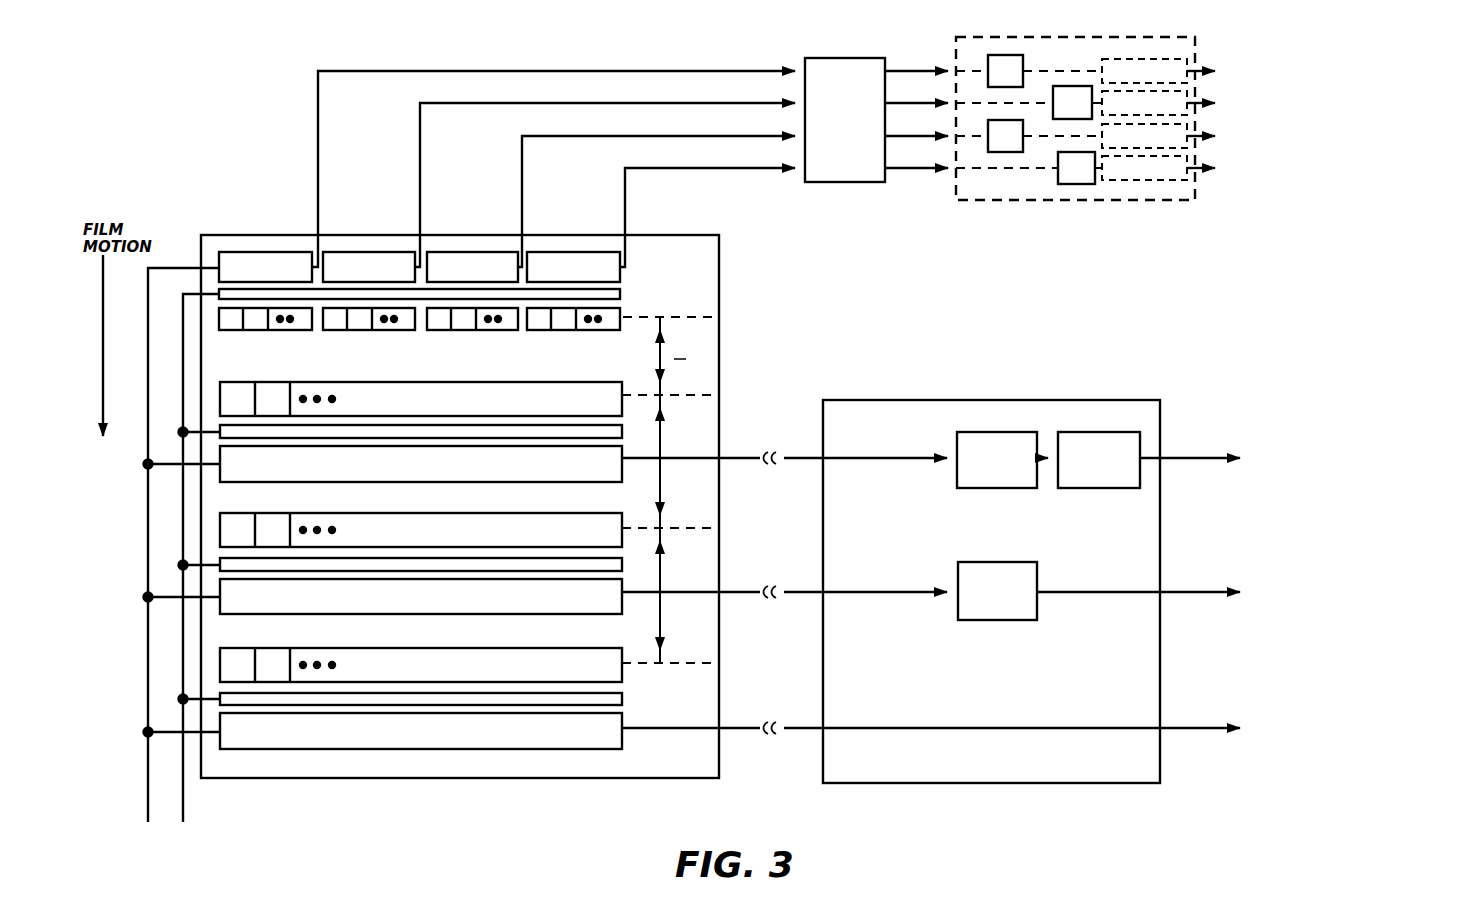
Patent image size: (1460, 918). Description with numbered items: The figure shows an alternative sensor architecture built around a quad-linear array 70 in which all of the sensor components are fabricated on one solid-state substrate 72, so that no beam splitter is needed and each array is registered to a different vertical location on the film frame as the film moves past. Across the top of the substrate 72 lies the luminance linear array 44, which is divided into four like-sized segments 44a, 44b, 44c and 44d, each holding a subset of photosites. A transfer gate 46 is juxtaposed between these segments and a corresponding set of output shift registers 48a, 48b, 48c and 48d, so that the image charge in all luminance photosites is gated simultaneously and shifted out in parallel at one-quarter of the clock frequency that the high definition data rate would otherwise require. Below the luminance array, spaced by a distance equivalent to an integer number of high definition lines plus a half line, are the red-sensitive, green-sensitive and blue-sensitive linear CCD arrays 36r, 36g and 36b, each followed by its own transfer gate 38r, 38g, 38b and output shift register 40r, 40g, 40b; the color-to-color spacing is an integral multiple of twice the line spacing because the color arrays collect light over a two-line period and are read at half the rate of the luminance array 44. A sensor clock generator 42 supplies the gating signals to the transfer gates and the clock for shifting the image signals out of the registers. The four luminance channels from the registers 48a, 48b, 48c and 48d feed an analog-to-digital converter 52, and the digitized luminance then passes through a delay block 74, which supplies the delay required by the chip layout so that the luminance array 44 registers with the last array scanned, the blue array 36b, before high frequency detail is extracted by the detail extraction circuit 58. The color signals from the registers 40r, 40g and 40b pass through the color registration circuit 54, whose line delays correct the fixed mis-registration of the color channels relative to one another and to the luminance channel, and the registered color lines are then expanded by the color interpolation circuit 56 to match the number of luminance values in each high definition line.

The red-sensitive linear CCD array 36r is at (335, 380).
The green-sensitive linear CCD array 36g is at (362, 512).
The blue-sensitive linear CCD array 36b is at (376, 647).
The red transfer gate 38r is at (596, 440).
The green transfer gate 38g is at (598, 572).
The blue transfer gate 38b is at (594, 706).
The red output shift register 40r is at (414, 483).
The green output shift register 40g is at (414, 615).
The blue output shift register 40b is at (447, 750).
The sensor clock generator 42 is at (194, 826).
The luminance linear array 44 is at (634, 308).
The luminance array segment 44a is at (248, 332).
The luminance array segment 44b is at (350, 332).
The luminance array segment 44c is at (475, 332).
The luminance array segment 44d is at (578, 332).
The luminance transfer gate 46 is at (625, 294).
The luminance output shift register 48a is at (275, 265).
The luminance output shift register 48b is at (383, 265).
The luminance output shift register 48c is at (487, 265).
The luminance output shift register 48d is at (590, 265).
The analog-to-digital converter 52 is at (836, 182).
The color registration circuit 54 is at (1013, 400).
The color interpolation circuit 56 is at (1250, 740).
The detail extraction circuit 58 is at (1222, 180).
The quad-linear array 70 is at (758, 345).
The solid-state substrate 72 is at (735, 376).
The delay block 74 is at (1034, 202).